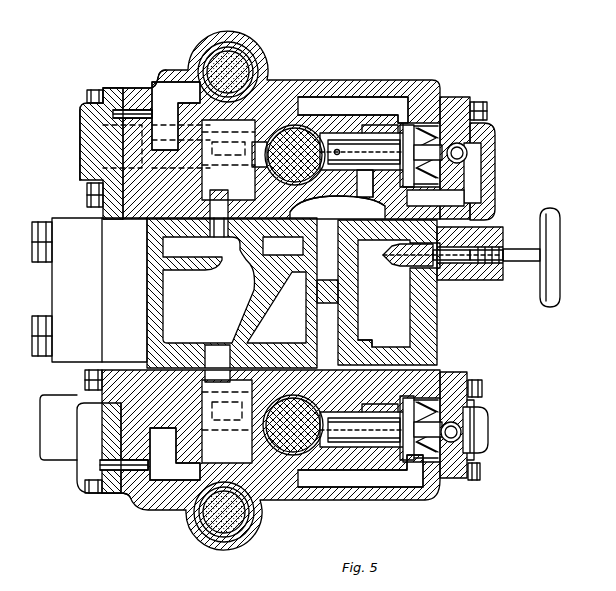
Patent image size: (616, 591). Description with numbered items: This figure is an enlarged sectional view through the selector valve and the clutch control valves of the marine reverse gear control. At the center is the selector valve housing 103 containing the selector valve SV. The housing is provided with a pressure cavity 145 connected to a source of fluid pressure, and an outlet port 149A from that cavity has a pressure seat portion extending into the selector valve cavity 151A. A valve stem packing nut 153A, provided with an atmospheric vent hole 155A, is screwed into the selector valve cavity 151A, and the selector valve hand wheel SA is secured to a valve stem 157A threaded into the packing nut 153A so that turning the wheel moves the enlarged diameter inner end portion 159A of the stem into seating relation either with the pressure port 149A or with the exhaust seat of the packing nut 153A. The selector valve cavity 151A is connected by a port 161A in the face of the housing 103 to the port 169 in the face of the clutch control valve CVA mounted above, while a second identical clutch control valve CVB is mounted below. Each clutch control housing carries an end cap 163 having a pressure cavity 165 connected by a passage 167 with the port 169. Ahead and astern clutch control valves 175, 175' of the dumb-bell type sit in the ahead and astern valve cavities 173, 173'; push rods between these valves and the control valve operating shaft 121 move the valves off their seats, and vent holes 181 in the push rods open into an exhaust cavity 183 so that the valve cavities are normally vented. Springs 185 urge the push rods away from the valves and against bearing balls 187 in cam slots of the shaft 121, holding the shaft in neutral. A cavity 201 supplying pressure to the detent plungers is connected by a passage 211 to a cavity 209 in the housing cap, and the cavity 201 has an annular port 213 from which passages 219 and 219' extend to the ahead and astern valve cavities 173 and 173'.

The annular port 213 is at (240, 44).
The cavity 201 is at (176, 88).
The clutch control valve CVA is at (148, 86).
The passage 211 is at (116, 112).
The cavity 209 is at (80, 134).
The control valve operating shaft 121 is at (292, 128).
The passage 219 is at (353, 89).
The exhaust cavity 183 is at (378, 125).
The ahead clutch control valve cavity 173 is at (432, 119).
The selector valve housing 103 is at (450, 99).
The ahead clutch control valve 175 is at (486, 133).
The end cap 163 is at (496, 136).
The pressure cavity 165 is at (482, 156).
The passage 167 is at (468, 203).
The vent hole 181 is at (352, 156).
The port 169 is at (337, 206).
The port 161A is at (370, 186).
The valve stem 157A is at (470, 228).
The selector valve hand wheel SA is at (561, 230).
The selector valve SV is at (160, 252).
The outlet port 149A is at (390, 268).
The selector valve cavity 151A is at (420, 268).
The enlarged diameter inner end portion 159A is at (404, 290).
The pressure cavity 145 is at (444, 322).
The atmospheric vent hole 155A is at (462, 282).
The valve stem packing nut 153A is at (498, 282).
The clutch control valve CVB is at (130, 497).
The astern clutch control valve 175' is at (483, 422).
The bearing ball 187 is at (489, 432).
The spring 185 is at (480, 448).
The astern clutch control valve cavity 173' is at (439, 457).
The passage 219' is at (360, 490).